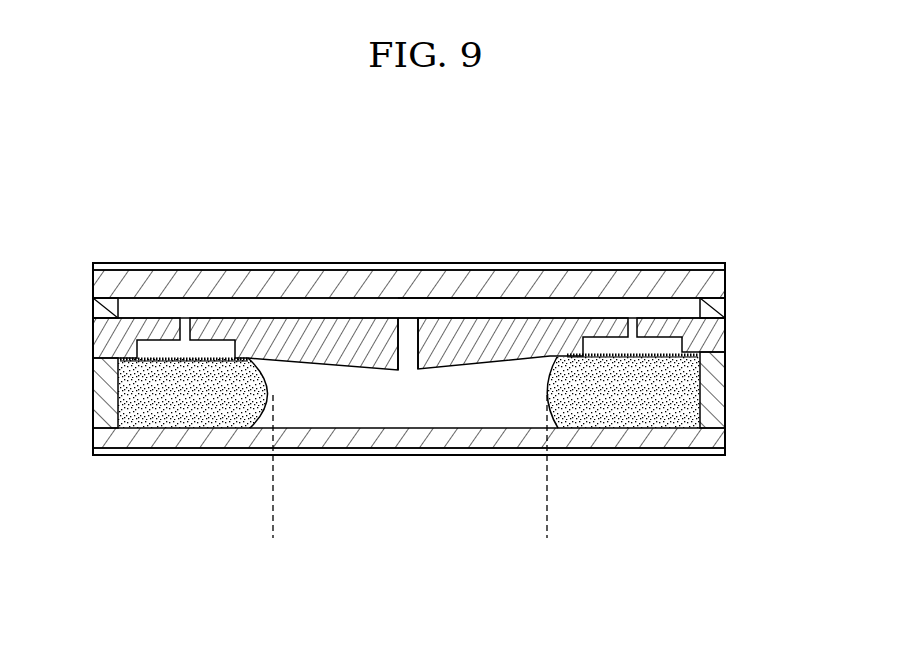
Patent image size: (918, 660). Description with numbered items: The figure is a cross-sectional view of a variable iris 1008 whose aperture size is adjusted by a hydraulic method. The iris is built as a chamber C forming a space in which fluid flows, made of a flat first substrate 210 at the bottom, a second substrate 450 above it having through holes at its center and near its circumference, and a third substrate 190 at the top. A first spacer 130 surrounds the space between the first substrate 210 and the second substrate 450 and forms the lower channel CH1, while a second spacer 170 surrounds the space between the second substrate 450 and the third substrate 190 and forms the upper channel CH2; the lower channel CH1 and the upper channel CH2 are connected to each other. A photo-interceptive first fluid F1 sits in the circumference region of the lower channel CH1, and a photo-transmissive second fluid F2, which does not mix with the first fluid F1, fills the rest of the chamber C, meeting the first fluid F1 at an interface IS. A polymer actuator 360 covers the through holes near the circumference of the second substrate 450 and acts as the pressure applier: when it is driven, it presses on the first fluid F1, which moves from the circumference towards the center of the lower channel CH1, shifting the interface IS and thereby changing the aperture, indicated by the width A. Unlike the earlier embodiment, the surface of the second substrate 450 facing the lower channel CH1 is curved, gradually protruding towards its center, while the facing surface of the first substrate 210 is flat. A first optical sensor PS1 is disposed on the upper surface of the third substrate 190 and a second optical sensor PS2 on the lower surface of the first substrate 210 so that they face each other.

The variable iris 1008 is at (696, 222).
The first optical sensor PS1 is at (708, 263).
The third substrate 190 is at (716, 279).
The second spacer 170 is at (717, 302).
The second substrate 450 is at (725, 332).
The first spacer 130 is at (717, 393).
The first substrate 210 is at (712, 440).
The second optical sensor PS2 is at (705, 450).
The chamber C is at (485, 215).
The lower channel CH1 is at (442, 393).
The upper channel CH2 is at (463, 310).
The first fluid F1 is at (623, 392).
The second fluid F2 is at (301, 393).
The interface IS is at (553, 360).
The polymer actuator 360 is at (603, 359).
The aperture width A is at (273, 532).